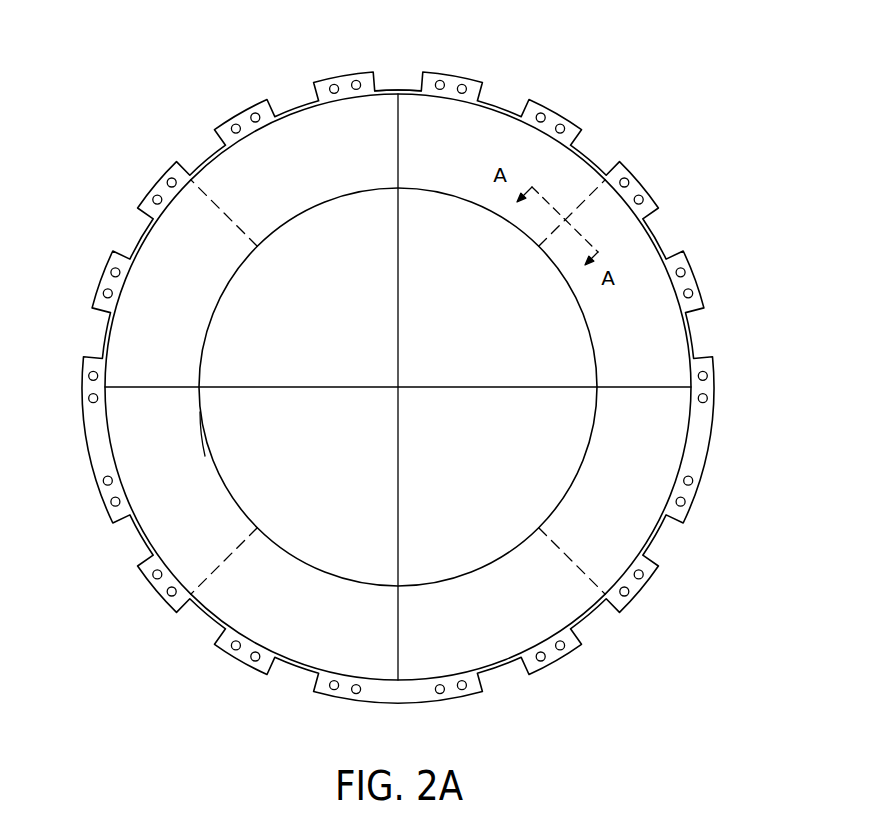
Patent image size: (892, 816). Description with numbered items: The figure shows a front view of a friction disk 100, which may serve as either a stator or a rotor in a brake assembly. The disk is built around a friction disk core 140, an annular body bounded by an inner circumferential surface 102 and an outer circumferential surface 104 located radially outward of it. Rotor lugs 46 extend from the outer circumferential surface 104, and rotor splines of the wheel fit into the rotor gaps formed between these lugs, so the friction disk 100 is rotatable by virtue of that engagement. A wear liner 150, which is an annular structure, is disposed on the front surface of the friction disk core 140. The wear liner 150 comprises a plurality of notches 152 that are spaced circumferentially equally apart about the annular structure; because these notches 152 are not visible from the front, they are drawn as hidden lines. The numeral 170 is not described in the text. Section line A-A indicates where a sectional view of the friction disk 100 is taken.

The friction disk 100 is at (123, 70).
The friction disk core 140 is at (694, 462).
The rotor lugs 46 is at (281, 92).
The outer circumferential surface 104 is at (389, 90).
The inner circumferential surface 102 is at (360, 193).
The wear liner 150 is at (198, 428).
The annular web 170 is at (398, 387).
The notches 152 is at (218, 215).